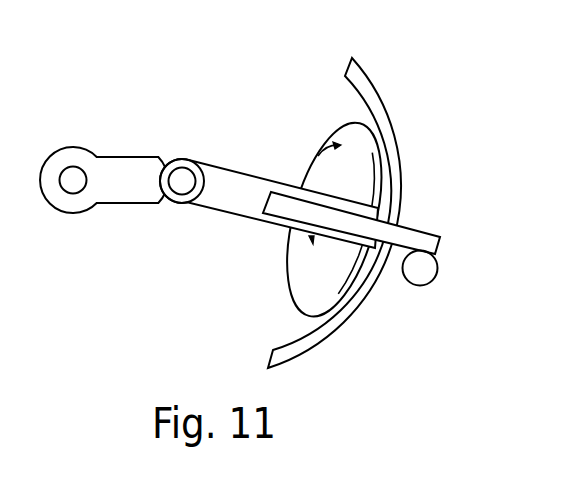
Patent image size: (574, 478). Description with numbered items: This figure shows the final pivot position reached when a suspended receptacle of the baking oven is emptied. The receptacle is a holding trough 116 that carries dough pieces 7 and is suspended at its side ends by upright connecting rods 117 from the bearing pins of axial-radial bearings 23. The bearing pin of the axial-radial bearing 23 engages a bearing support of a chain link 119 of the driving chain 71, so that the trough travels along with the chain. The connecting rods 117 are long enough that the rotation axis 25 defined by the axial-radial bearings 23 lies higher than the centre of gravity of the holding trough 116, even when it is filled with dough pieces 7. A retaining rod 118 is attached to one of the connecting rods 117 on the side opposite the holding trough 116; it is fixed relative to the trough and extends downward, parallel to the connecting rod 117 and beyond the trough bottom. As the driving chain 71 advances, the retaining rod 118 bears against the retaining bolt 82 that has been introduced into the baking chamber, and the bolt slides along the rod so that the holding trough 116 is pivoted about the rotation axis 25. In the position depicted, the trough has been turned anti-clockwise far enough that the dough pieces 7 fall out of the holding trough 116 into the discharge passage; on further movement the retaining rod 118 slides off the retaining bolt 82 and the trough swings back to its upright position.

The dough pieces 7 is at (298, 280).
The axial-radial bearing 23 is at (184, 163).
The rotation axis 25 is at (183, 185).
The driving chain 71 is at (50, 150).
The retaining bolt 82 is at (420, 268).
The holding trough 116 is at (399, 137).
The connecting rod 117 is at (243, 190).
The retaining rod 118 is at (398, 233).
The chain link 119 is at (140, 180).